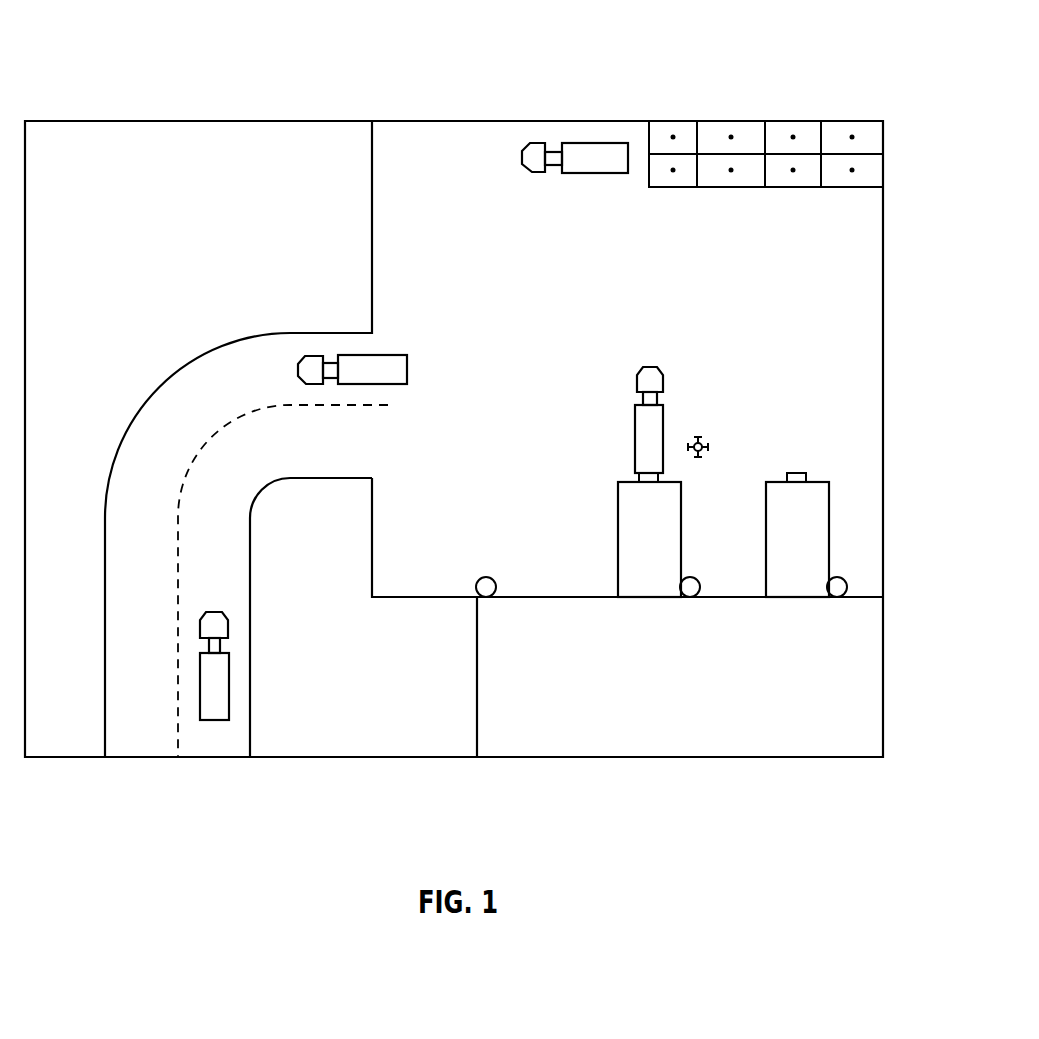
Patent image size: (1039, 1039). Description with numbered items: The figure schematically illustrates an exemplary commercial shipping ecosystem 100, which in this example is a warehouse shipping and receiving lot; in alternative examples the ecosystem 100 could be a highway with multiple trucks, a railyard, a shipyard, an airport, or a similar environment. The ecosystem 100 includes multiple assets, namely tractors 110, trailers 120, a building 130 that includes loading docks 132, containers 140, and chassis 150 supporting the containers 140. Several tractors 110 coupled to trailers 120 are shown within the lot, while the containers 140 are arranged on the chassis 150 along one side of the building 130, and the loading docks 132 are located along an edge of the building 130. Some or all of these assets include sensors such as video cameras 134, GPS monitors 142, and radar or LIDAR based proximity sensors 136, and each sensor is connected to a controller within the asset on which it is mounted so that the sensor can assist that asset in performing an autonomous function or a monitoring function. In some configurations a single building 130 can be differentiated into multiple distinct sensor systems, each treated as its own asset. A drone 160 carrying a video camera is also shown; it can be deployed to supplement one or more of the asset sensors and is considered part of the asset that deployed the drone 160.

The commercial shipping ecosystem 100 is at (104, 34).
The tractor 110 is at (536, 173).
The trailer 120 is at (596, 157).
The building 130 is at (701, 692).
The loading dock 132 is at (630, 535).
The video camera 134 is at (484, 577).
The radar or LIDAR based proximity sensor 136 is at (648, 470).
The container 140 is at (713, 136).
The GPS monitor 142 is at (852, 131).
The chassis 150 is at (795, 144).
The drone 160 is at (704, 452).